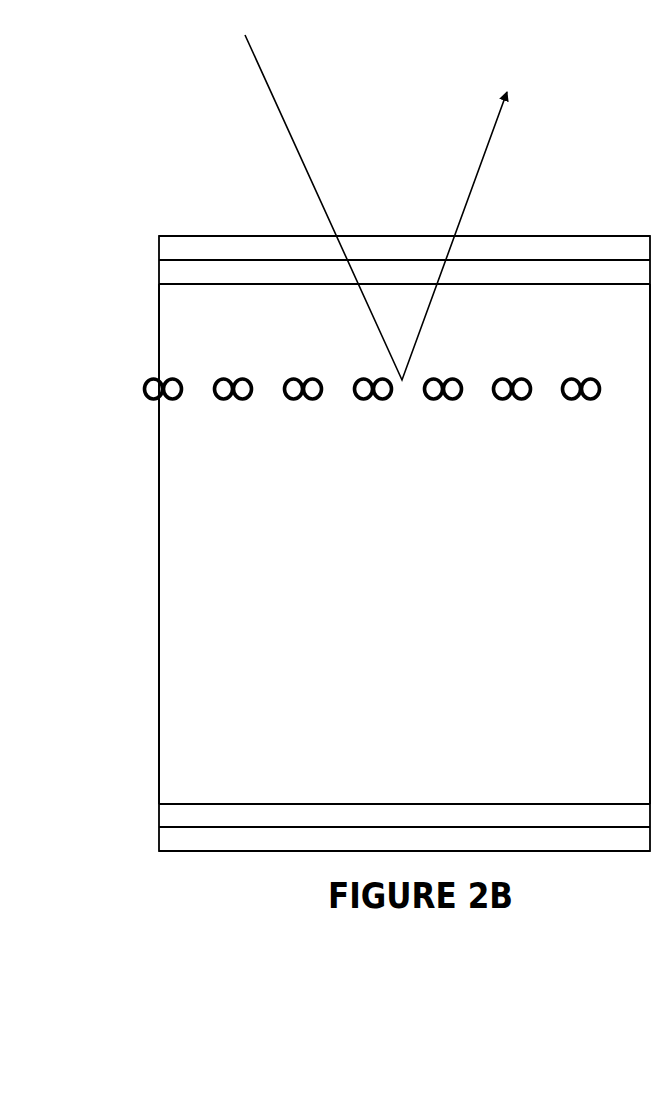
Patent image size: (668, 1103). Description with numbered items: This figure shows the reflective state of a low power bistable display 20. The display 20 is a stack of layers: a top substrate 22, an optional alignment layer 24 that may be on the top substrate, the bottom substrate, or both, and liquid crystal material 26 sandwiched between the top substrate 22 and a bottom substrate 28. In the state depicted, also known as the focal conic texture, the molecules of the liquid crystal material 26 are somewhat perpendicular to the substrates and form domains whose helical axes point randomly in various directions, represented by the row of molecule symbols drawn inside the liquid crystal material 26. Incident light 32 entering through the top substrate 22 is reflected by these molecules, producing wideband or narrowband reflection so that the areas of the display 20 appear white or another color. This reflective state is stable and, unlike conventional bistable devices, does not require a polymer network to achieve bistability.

The low power bistable display 20 is at (96, 183).
The top substrate 22 is at (172, 245).
The alignment layer 24 is at (168, 268).
The liquid crystal material 26 is at (185, 533).
The bottom substrate 28 is at (162, 838).
The incident light 32 is at (288, 135).